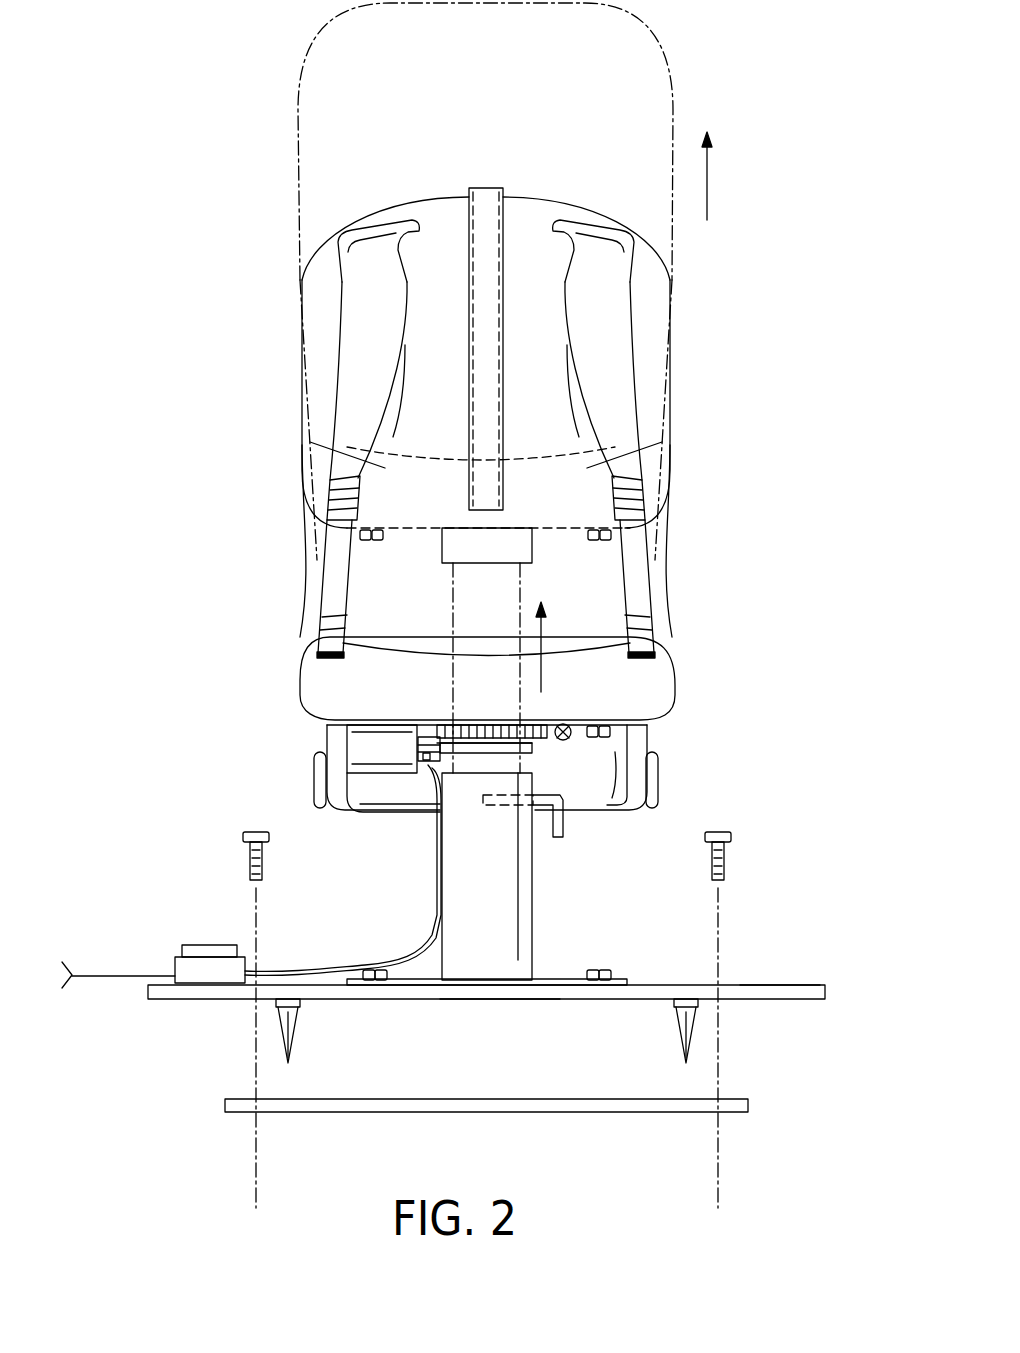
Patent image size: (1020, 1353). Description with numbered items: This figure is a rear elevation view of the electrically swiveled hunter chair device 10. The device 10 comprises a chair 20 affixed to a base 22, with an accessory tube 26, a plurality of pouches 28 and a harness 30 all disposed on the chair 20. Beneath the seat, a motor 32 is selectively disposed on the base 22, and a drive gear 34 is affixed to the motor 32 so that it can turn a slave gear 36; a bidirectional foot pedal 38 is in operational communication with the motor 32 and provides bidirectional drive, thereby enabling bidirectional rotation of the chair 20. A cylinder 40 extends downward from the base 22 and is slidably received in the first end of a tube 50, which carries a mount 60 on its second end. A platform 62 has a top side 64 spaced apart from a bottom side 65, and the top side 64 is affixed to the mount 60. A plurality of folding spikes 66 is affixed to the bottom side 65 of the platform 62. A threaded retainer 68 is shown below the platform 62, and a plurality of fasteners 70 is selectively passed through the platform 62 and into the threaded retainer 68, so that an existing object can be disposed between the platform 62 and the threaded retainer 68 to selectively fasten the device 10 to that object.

The electrically swiveled hunter chair device 10 is at (778, 193).
The chair 20 is at (670, 421).
The base 22 is at (345, 739).
The accessory tube 26 is at (490, 200).
The pouches 28 is at (315, 770).
The harness 30 is at (366, 360).
The motor 32 is at (382, 762).
The drive gear 34 is at (430, 762).
The slave gear 36 is at (537, 740).
The bidirectional foot pedal 38 is at (175, 960).
The cylinder 40 is at (472, 760).
The tube 50 is at (525, 902).
The mount 60 is at (558, 977).
The platform 62 is at (825, 990).
The top side 64 is at (777, 982).
The bottom side 65 is at (493, 1000).
The folding spikes 66 is at (283, 1023).
The threaded retainer 68 is at (590, 1110).
The fasteners 70 is at (243, 835).